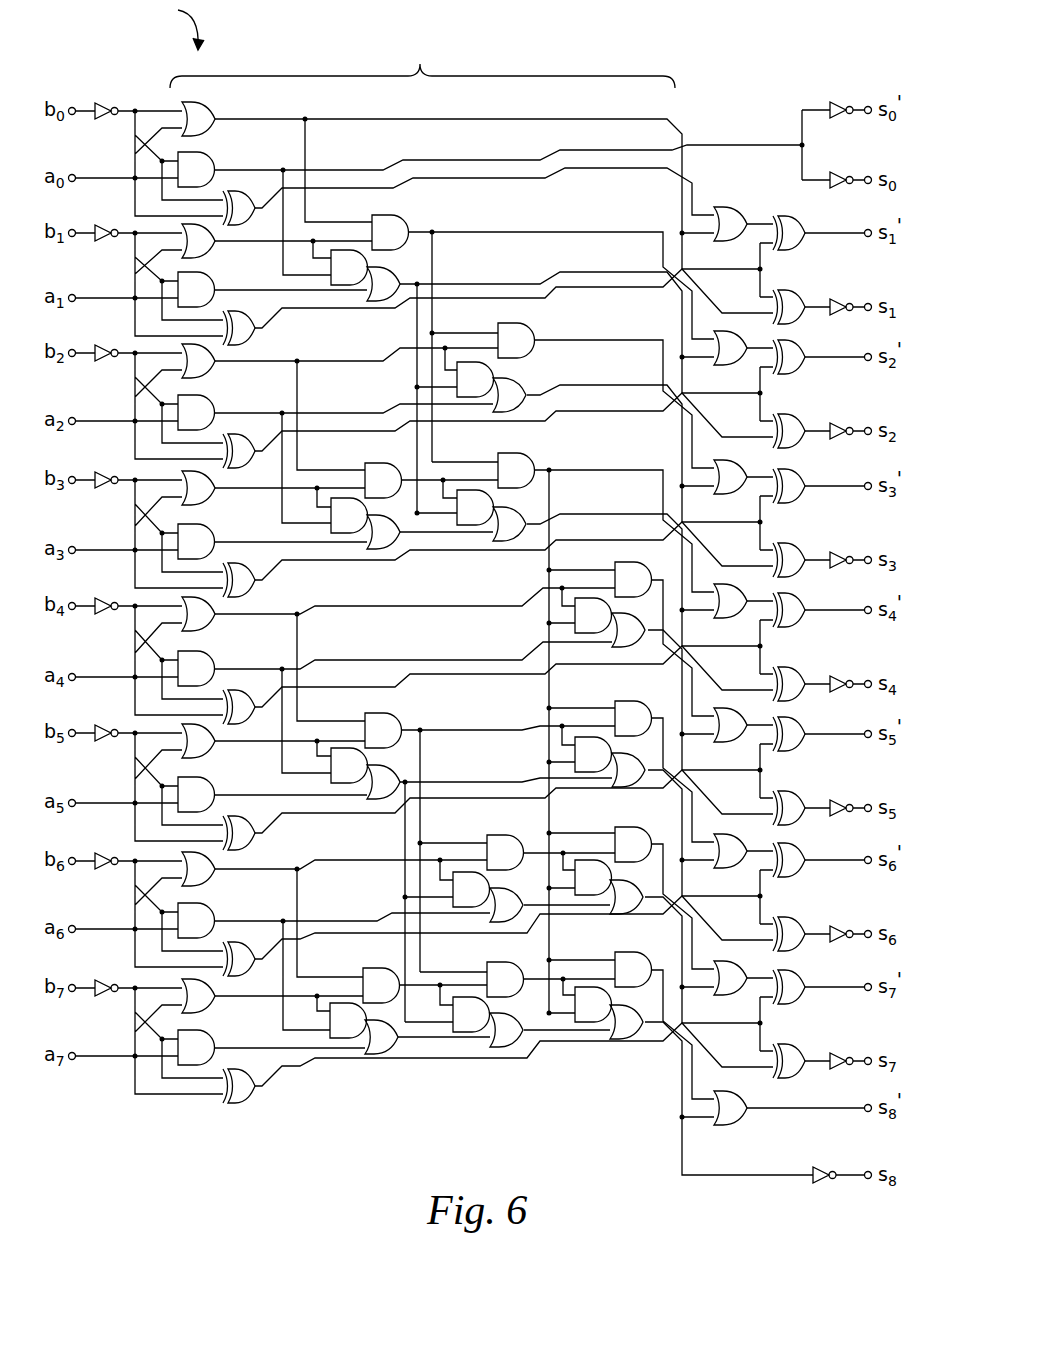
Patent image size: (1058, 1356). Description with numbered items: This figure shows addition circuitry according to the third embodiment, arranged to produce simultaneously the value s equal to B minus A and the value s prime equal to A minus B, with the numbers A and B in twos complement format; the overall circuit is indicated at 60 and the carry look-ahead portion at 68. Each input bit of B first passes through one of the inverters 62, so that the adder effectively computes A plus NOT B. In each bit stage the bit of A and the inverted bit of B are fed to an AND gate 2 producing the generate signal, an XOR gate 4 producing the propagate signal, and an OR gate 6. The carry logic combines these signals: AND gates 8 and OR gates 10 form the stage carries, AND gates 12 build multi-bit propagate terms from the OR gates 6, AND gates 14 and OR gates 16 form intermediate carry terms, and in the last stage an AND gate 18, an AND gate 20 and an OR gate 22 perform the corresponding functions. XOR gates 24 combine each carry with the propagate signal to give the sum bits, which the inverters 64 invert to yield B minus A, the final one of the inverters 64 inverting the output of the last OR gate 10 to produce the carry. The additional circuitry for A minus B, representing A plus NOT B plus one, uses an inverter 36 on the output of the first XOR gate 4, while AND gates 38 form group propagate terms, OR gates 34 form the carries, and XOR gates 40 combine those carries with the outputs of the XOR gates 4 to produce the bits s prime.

The adder/subtractor circuit 60 is at (173, 25).
The carry look-ahead logic block 68 is at (422, 64).
The inverters 62 is at (88, 977).
The OR gates 34 is at (740, 1139).
The OR gates 6 is at (213, 1020).
The AND gates 2 is at (220, 1059).
The XOR gates 4 is at (248, 1104).
The AND gates 38 is at (635, 958).
The AND gates 8 is at (595, 986).
The OR gates 10 is at (686, 1014).
The AND gates 12 is at (488, 966).
The AND gates 14 is at (462, 1067).
The OR gates 16 is at (498, 1021).
The AND gate 18 is at (370, 970).
The AND gate 20 is at (340, 1038).
The OR gate 22 is at (372, 1054).
The inverter 36 is at (836, 102).
The inverters 64 is at (816, 1168).
The XOR gates 40 is at (796, 974).
The XOR gates 24 is at (783, 1046).